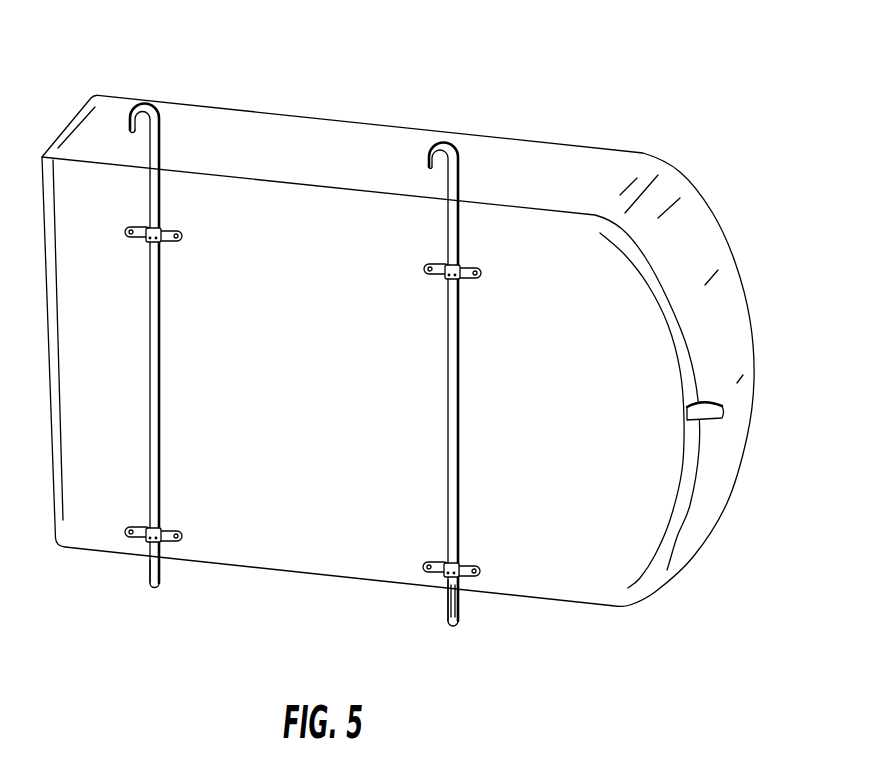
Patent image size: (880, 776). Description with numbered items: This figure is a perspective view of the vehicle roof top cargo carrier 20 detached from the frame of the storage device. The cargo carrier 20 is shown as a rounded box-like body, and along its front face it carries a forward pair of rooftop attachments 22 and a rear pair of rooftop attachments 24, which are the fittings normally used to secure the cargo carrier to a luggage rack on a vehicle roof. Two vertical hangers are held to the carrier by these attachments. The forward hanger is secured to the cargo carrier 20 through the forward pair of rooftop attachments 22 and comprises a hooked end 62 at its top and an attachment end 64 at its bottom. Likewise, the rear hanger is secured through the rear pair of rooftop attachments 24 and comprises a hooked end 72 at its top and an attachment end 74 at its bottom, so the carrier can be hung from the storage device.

The cargo carrier 20 is at (740, 273).
The forward pair of rooftop attachments 22 is at (483, 271).
The rear pair of rooftop attachments 24 is at (183, 234).
The hooked end 62 is at (447, 140).
The attachment end 64 is at (443, 612).
The hooked end 72 is at (150, 102).
The attachment end 74 is at (144, 582).